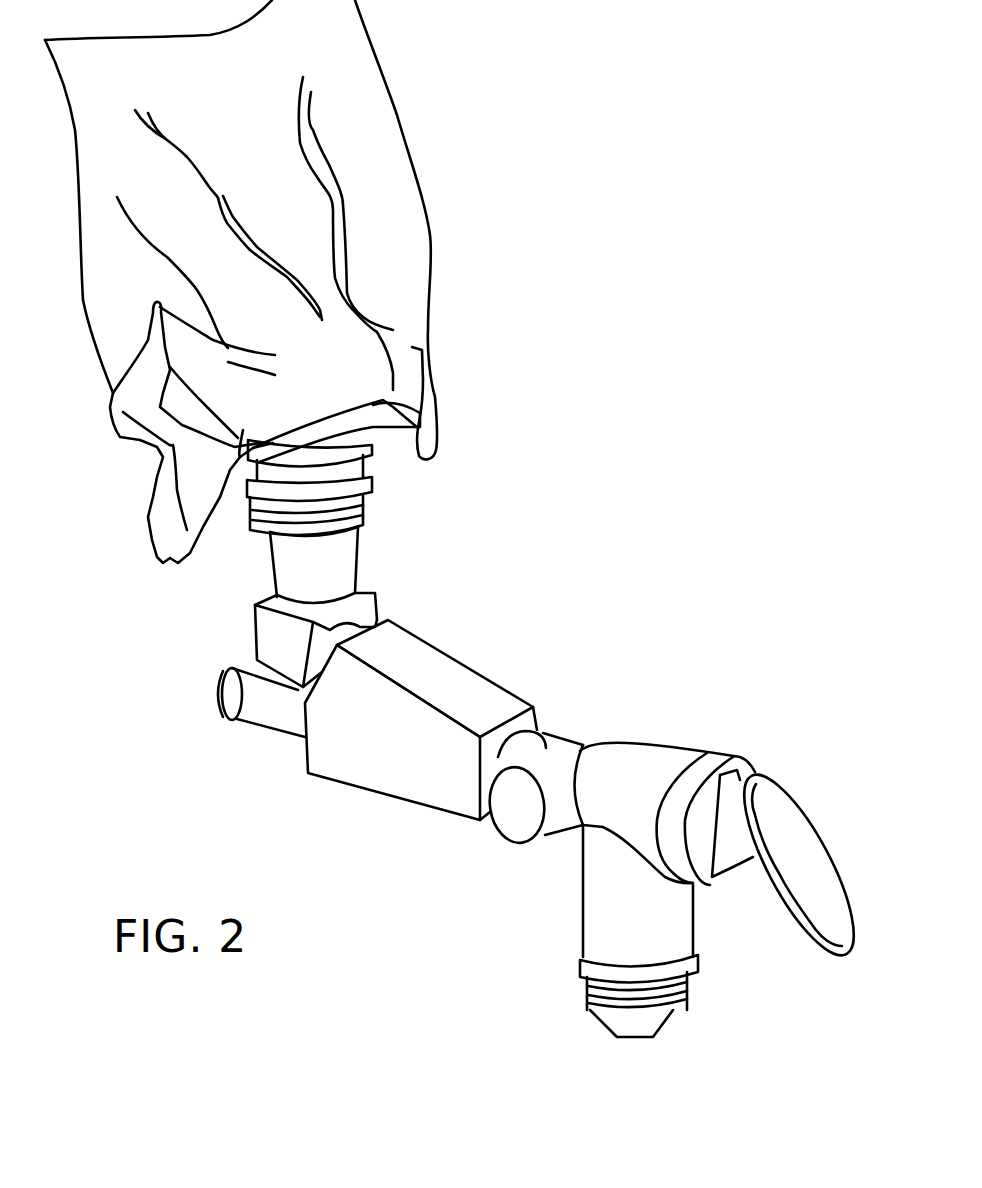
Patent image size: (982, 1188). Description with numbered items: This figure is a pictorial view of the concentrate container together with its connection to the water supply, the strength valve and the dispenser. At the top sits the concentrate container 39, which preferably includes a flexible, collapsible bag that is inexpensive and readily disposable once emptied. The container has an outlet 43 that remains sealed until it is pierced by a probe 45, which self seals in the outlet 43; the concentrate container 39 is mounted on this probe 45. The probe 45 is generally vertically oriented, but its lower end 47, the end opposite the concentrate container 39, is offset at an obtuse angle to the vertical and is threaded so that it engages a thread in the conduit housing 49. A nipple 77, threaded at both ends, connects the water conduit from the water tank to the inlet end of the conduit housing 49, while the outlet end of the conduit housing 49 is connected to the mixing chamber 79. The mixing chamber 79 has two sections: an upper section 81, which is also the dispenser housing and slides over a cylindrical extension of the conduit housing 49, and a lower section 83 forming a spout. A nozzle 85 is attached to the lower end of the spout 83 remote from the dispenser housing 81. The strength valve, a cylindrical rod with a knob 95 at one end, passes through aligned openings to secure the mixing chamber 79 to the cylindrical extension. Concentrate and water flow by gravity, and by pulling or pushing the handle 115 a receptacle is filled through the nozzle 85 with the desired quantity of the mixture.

The concentrate container 39 is at (367, 83).
The outlet 43 is at (420, 427).
The probe 45 is at (347, 557).
The lower end of the probe 47 is at (267, 622).
The conduit housing 49 is at (423, 652).
The nipple 77 is at (282, 722).
The mixing chamber 79 is at (643, 757).
The upper section (dispenser housing) 81 is at (587, 760).
The lower section (spout) 83 is at (600, 897).
The nozzle 85 is at (615, 1025).
The knob 95 is at (518, 825).
The handle 115 is at (808, 902).